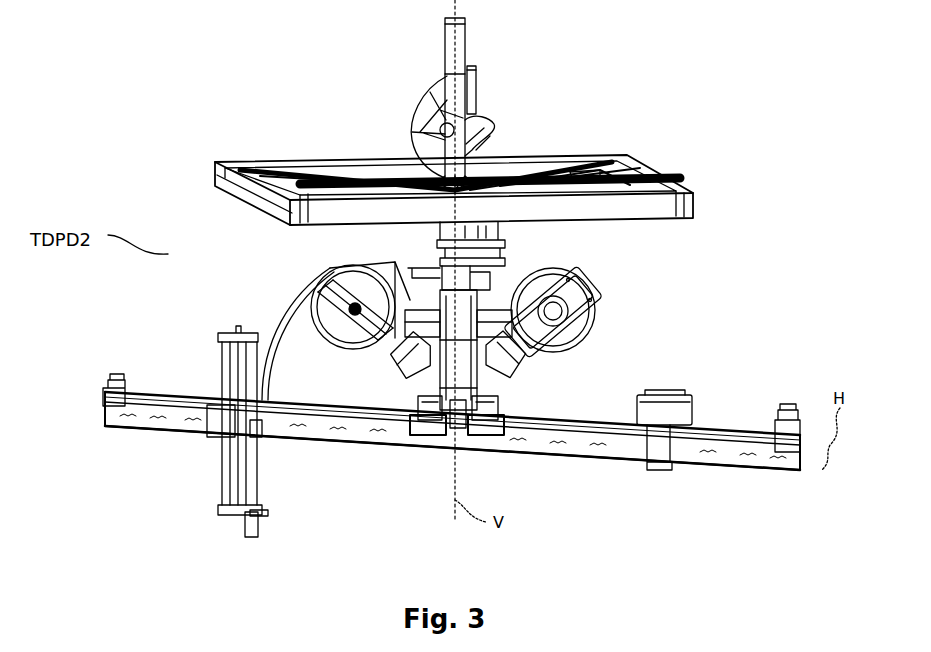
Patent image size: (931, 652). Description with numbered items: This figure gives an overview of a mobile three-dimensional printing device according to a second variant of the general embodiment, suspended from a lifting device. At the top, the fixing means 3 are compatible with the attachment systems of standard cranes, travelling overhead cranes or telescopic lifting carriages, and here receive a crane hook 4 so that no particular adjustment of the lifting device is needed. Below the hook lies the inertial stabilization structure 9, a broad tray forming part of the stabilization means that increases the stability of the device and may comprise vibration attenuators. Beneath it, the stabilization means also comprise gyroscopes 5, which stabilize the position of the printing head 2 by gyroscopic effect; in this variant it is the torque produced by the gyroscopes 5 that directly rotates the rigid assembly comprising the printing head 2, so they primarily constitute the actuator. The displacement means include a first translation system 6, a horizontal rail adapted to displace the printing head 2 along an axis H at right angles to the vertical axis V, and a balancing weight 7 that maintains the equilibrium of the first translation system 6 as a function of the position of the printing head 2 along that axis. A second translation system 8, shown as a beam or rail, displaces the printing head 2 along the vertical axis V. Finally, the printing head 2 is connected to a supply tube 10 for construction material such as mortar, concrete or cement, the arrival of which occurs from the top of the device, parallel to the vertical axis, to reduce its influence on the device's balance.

The printing head 2 is at (262, 527).
The fixing means 3 is at (447, 152).
The crane hook 4 is at (466, 50).
The gyroscopes 5 is at (587, 318).
The first translation system 6 is at (508, 452).
The balancing weight 7 is at (680, 412).
The second translation system 8 is at (222, 375).
The inertial stabilization structure 9 is at (656, 173).
The supply tube 10 is at (296, 300).